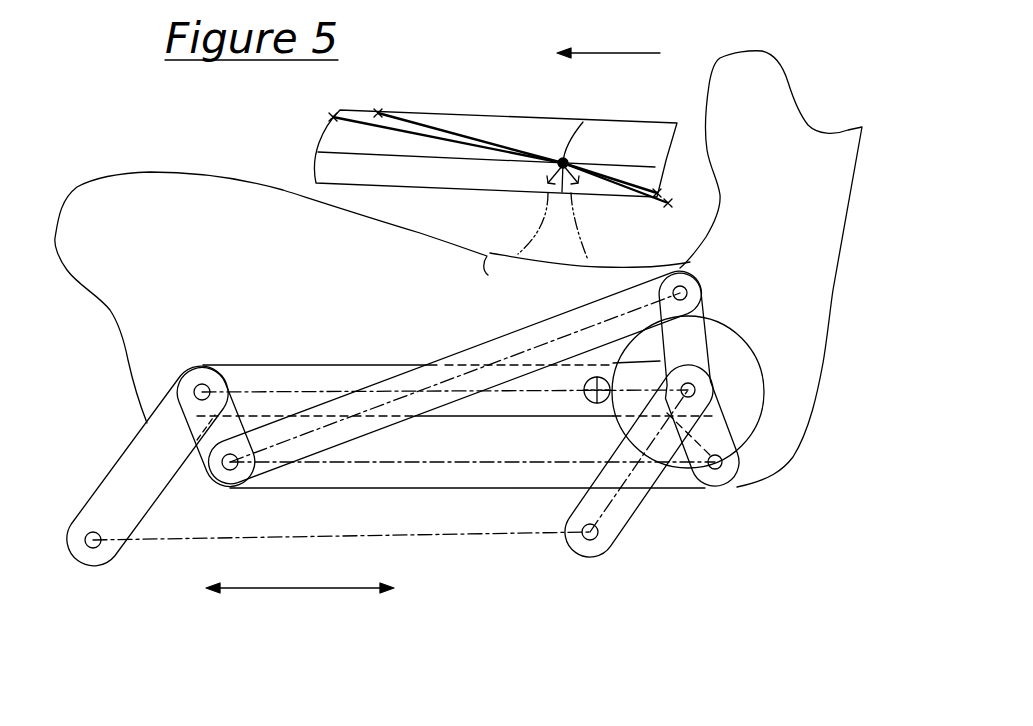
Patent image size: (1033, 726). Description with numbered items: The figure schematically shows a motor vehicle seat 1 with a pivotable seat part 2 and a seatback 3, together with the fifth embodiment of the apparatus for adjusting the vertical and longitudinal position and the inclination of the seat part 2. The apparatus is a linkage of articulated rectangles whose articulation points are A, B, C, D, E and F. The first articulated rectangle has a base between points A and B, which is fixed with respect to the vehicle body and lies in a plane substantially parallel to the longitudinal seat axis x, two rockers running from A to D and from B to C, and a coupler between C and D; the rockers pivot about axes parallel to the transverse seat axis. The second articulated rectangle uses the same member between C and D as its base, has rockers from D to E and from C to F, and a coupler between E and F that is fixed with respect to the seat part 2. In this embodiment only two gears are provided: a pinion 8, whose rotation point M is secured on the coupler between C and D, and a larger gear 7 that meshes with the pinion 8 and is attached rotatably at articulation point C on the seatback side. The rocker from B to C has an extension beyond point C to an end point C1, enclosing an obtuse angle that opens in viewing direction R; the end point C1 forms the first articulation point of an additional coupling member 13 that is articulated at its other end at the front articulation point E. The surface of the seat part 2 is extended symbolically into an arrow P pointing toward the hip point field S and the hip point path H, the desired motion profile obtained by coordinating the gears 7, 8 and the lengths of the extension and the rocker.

The motor vehicle seat 1 is at (93, 98).
The pivotable seat part 2 is at (93, 221).
The seatback 3 is at (777, 105).
The gear 7 is at (752, 400).
The pinion 8 is at (588, 398).
The coupling member 13 is at (553, 327).
The articulation point A is at (80, 563).
The articulation point B is at (603, 546).
The articulation point C is at (712, 360).
The end point C1 is at (687, 288).
The articulation point D is at (212, 387).
The articulation point E is at (226, 470).
The articulation point F is at (703, 483).
The hip point path H is at (413, 128).
The rotation point M is at (587, 382).
The arrow P is at (577, 190).
The viewing direction R is at (616, 54).
The hip point field S is at (634, 136).
The longitudinal seat axis x is at (303, 599).